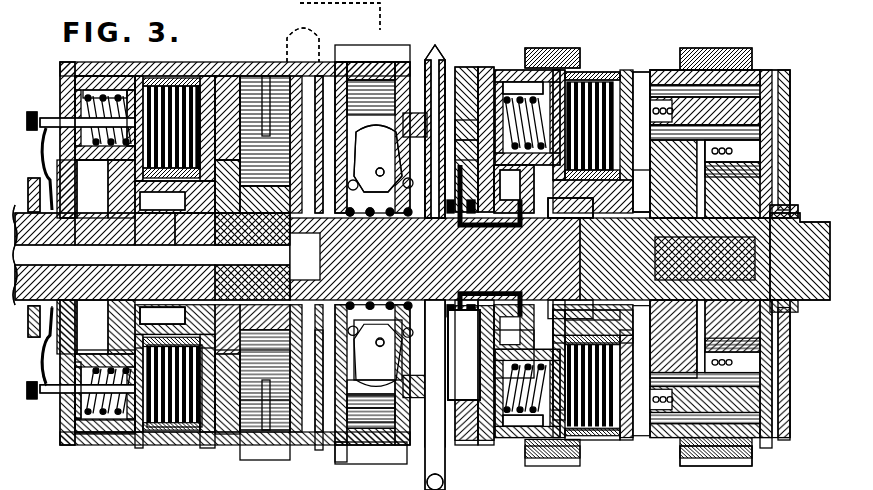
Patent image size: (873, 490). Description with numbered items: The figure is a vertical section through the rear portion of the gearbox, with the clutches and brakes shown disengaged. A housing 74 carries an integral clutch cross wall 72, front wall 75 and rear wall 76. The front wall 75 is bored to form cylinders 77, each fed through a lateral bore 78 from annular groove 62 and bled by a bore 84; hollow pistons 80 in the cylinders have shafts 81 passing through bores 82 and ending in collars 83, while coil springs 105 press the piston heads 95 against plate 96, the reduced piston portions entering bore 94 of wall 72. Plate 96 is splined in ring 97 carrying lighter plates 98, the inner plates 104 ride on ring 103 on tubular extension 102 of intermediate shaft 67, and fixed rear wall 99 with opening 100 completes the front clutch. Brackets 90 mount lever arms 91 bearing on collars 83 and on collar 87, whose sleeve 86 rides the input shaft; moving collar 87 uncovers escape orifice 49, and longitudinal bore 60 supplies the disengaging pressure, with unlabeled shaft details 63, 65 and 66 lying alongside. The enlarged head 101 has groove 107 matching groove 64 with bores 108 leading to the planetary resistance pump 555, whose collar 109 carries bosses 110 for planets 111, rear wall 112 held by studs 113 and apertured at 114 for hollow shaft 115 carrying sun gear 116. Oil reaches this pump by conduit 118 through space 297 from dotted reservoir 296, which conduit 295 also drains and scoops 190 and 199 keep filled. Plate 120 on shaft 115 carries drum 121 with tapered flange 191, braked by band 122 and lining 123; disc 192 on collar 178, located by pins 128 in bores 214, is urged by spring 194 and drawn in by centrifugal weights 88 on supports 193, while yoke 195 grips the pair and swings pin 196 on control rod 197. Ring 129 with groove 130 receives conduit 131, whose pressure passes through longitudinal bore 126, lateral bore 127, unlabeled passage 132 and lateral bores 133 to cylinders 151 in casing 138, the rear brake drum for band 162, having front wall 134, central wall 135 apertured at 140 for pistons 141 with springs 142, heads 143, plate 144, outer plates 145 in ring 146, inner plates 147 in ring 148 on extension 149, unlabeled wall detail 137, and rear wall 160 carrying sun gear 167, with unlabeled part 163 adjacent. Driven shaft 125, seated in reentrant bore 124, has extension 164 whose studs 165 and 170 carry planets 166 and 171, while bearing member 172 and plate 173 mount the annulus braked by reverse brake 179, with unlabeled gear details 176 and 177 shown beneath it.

The front wall 75 is at (60, 76).
The bore 94 is at (86, 78).
The cylinder 77 is at (100, 92).
The piston 80 is at (131, 90).
The piston head 95 is at (152, 86).
The ring 97 is at (195, 86).
The collar 109 is at (227, 78).
The annular groove 107 is at (258, 76).
The aperture 114 is at (268, 76).
The lateral bore 78 is at (60, 118).
The collar 83 is at (33, 130).
The collar 87 is at (33, 180).
The plate 96 is at (175, 197).
The enlarged head 101 is at (162, 201).
The circular opening 100 is at (240, 170).
The conduit 295 is at (300, 14).
The reservoir 296 is at (290, 40).
The scoops 190 is at (300, 8).
The conduit 118 is at (320, 60).
The space 297 is at (348, 46).
The lining 123 is at (370, 62).
The brake band 122 is at (365, 60).
The outer casing 121 is at (433, 58).
The tapered flange 191 is at (445, 66).
The disc 192 is at (446, 82).
The front wall 134 is at (486, 80).
The centrifugal weights 88 is at (466, 100).
The supports 193 is at (462, 122).
The cylinder wall 132 is at (462, 142).
The conduit 131 is at (462, 168).
The cylinders 151 is at (512, 82).
The central clutch wall 135 is at (549, 46).
The plate 120 is at (382, 168).
The pin 66 is at (359, 206).
The pin 65 is at (378, 206).
The ring 148 is at (514, 188).
The lateral bore 127 is at (506, 193).
The longitudinal bore 126 is at (570, 208).
The tubular extension 149 is at (573, 208).
The clutch plate 163 is at (570, 70).
The brake band 162 is at (590, 72).
The outer clutch plates 145 is at (640, 72).
The casing member 138 is at (605, 82).
The studs 170 is at (660, 70).
The inner clutch plates 147 is at (642, 76).
The brake 179 is at (720, 49).
The second series of planet gears 171 is at (760, 72).
The first series of planet gears 166 is at (760, 110).
The studs 165 is at (760, 133).
The plate-like extension 164 is at (760, 152).
The driven shaft 125 is at (784, 205).
The escape orifice 49 is at (18, 268).
The sleeve 86 is at (60, 245).
The longitudinal bore 60 is at (105, 239).
The annular groove 62 is at (125, 245).
The annular groove 64 is at (175, 245).
The bores 108 is at (115, 276).
The shaft portion 63 is at (215, 250).
The ring 103 is at (158, 311).
The tubular extension 102 is at (162, 311).
The lever arm 91 is at (44, 350).
The bracket 90 is at (30, 382).
The piston shaft 81 is at (50, 393).
The bore 82 is at (40, 400).
The bore 84 is at (60, 440).
The coil spring 105 is at (90, 436).
The clutch cross wall 72 is at (100, 432).
The inner clutch plates 104 is at (128, 436).
The lighter plates 98 is at (140, 446).
The housing 74 is at (170, 440).
The rear wall 99 is at (207, 446).
The sun gear 116 is at (230, 434).
The bosses 110 is at (265, 436).
The planetary gear resistance pump 555 is at (250, 446).
The planet gears 111 is at (270, 446).
The shaft 115 is at (375, 343).
The intermediate shaft 67 is at (382, 338).
The scoops 199 is at (318, 336).
The rear wall 76 is at (370, 381).
The pins 128 is at (371, 392).
The bores 214 is at (371, 408).
The annular groove 130 is at (464, 355).
The collar 178 is at (464, 355).
The ring 129 is at (464, 355).
The cylinder wall 137 is at (464, 355).
The piston heads 143 is at (512, 415).
The lateral bores 133 is at (565, 362).
The reentrant bore 124 is at (592, 312).
The rear pump wall 112 is at (335, 448).
The stud elements 113 is at (340, 462).
The yoke 195 is at (425, 462).
The spring 194 is at (447, 400).
The piston 141 is at (510, 440).
The coil spring 142 is at (488, 446).
The pin 196 is at (470, 446).
The brake control rod 197 is at (545, 466).
The aperture 140 is at (575, 450).
The rear clutch wall 160 is at (626, 440).
The heavy movable plate 144 is at (600, 446).
The sun gear 167 is at (665, 440).
The gear 176 is at (690, 466).
The gear teeth 177 is at (735, 466).
The ring 146 is at (600, 450).
The bearing member 172 is at (788, 305).
The plate 173 is at (772, 380).